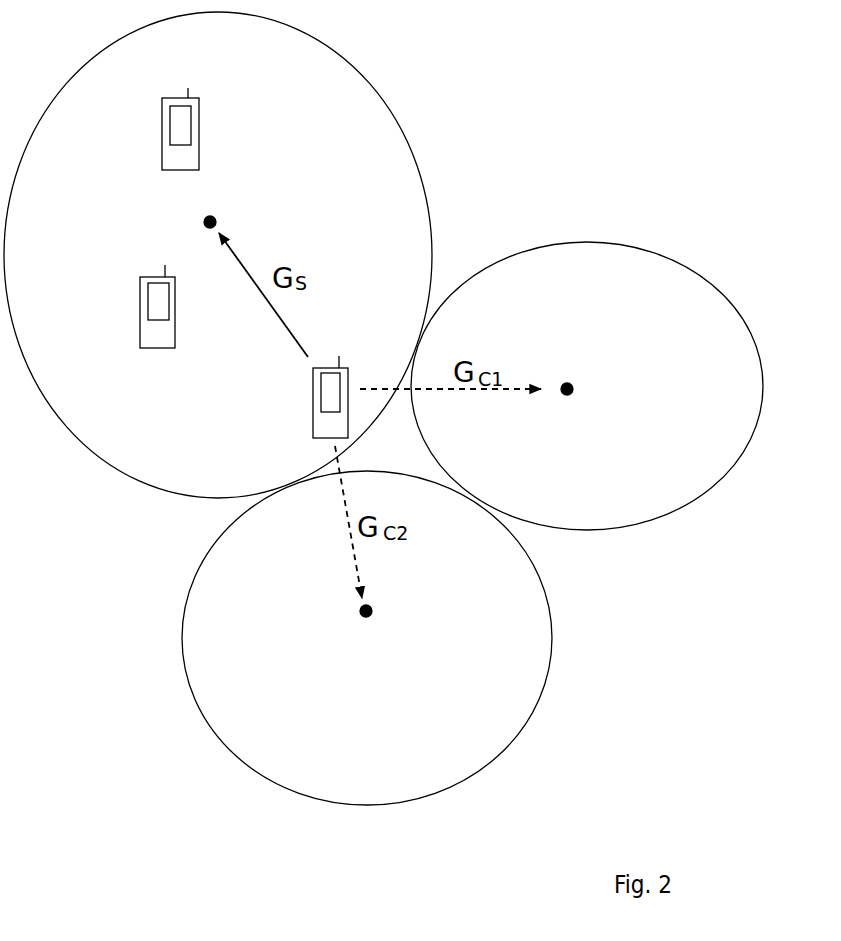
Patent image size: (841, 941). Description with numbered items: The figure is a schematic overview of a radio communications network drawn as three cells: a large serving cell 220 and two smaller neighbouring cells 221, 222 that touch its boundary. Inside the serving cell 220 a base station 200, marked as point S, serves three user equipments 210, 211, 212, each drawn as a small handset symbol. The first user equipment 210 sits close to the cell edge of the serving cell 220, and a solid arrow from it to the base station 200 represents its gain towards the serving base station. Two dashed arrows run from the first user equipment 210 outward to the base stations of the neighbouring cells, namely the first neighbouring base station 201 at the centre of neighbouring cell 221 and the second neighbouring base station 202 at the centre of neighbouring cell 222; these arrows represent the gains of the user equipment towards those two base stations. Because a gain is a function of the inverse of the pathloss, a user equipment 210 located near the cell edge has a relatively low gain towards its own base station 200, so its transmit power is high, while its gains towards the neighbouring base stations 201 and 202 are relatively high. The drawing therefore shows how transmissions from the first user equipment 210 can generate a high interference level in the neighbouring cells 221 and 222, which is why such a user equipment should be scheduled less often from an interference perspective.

The base station 200 is at (216, 214).
The base station C1 201 is at (574, 393).
The base station C2 202 is at (360, 617).
The first user equipment 210 is at (313, 410).
The user equipment 211 is at (137, 308).
The user equipment 212 is at (158, 131).
The serving cell 220 is at (390, 108).
The neighbouring cell 221 is at (678, 260).
The neighbouring cell 222 is at (553, 647).